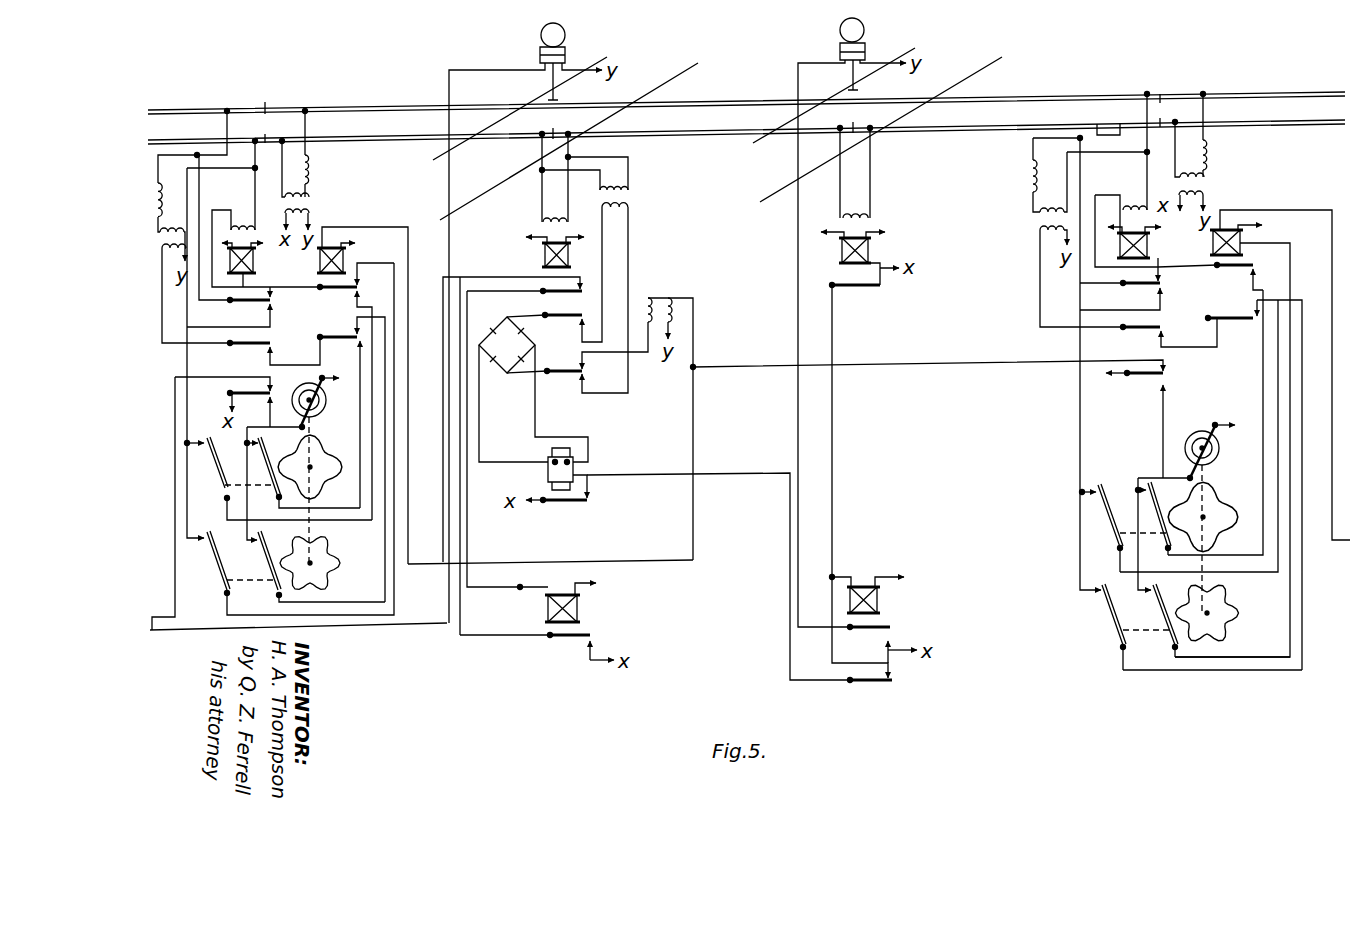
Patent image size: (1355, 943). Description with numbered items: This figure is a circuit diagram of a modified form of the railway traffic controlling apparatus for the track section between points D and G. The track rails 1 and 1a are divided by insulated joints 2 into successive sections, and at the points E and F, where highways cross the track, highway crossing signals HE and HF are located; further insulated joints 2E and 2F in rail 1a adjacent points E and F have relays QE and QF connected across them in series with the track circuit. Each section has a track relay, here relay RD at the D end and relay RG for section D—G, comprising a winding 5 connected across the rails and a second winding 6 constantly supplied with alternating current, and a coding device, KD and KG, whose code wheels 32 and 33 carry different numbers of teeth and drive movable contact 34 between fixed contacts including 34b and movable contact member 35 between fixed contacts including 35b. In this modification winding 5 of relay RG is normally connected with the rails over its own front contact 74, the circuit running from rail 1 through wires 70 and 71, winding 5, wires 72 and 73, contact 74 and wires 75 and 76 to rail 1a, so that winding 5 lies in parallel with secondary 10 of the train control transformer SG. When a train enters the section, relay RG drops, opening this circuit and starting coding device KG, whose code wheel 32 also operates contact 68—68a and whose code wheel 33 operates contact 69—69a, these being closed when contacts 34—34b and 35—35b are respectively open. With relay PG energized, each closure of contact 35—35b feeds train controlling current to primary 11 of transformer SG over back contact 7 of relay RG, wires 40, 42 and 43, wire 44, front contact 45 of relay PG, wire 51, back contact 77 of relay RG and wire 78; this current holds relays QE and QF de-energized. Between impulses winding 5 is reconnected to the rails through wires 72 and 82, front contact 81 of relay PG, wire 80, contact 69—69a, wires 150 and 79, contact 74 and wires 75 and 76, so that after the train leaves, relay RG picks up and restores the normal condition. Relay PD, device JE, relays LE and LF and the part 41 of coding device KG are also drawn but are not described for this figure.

The track rail 1 is at (1014, 93).
The track rail 1a is at (1030, 133).
The insulated joints 2 is at (746, 121).
The insulated joint 2E is at (562, 122).
The insulated joint 2F is at (856, 116).
The track relay winding 5 is at (1135, 195).
The track relay winding 6 is at (1120, 249).
The back contact of relay RG 7 is at (1126, 382).
The transformer secondary 10 is at (1049, 171).
The transformer primary 11 is at (1026, 229).
The code wheel 32 is at (1220, 535).
The code wheel 33 is at (1228, 607).
The movable contact 34 is at (1138, 513).
The fixed contact 34b is at (1130, 504).
The movable contact member 35 is at (1155, 652).
The fixed contact 35b is at (1149, 614).
The wire 40 is at (1165, 401).
The cam controller arm 41 is at (1212, 473).
The wire 42 is at (1152, 474).
The wire 43 is at (1140, 577).
The wire 44 is at (1232, 646).
The front contact of relay PG 45 is at (1232, 308).
The wire 51 is at (1171, 349).
The contact 68 is at (1106, 512).
The contact 68a is at (1090, 489).
The contact 69 is at (1119, 636).
The contact 69a is at (1093, 614).
The wire 70 is at (1107, 144).
The wire 71 is at (1147, 167).
The wire 72 is at (1122, 218).
The wire 73 is at (1162, 269).
The front contact of relay RG 74 is at (1150, 286).
The wire 75 is at (1080, 284).
The wire 76 is at (1103, 117).
The back contact of relay RG 77 is at (1150, 331).
The wire 78 is at (1038, 281).
The wire 79 is at (1080, 411).
The wire 80 is at (1183, 671).
The front contact of relay PG 81 is at (1247, 271).
The wire 82 is at (1221, 257).
The wire 150 is at (1080, 549).
The section boundary point D is at (265, 111).
The highway crossing point E is at (565, 83).
The highway crossing point F is at (864, 77).
The section boundary point G is at (1163, 97).
The highway crossing signal HE is at (540, 51).
The highway crossing signal HF is at (840, 48).
The track relay RD is at (254, 270).
The relay P at D PD is at (320, 262).
The coding device KD is at (317, 397).
The relay QE is at (545, 259).
The rectifier device J at E JE is at (548, 475).
The relay L at E LE is at (578, 611).
The relay QF is at (870, 254).
The relay L at F LF is at (878, 605).
The train control transformer SG is at (1031, 199).
The track relay RG is at (1140, 235).
The relay PG is at (1243, 243).
The coding device KG is at (1212, 449).